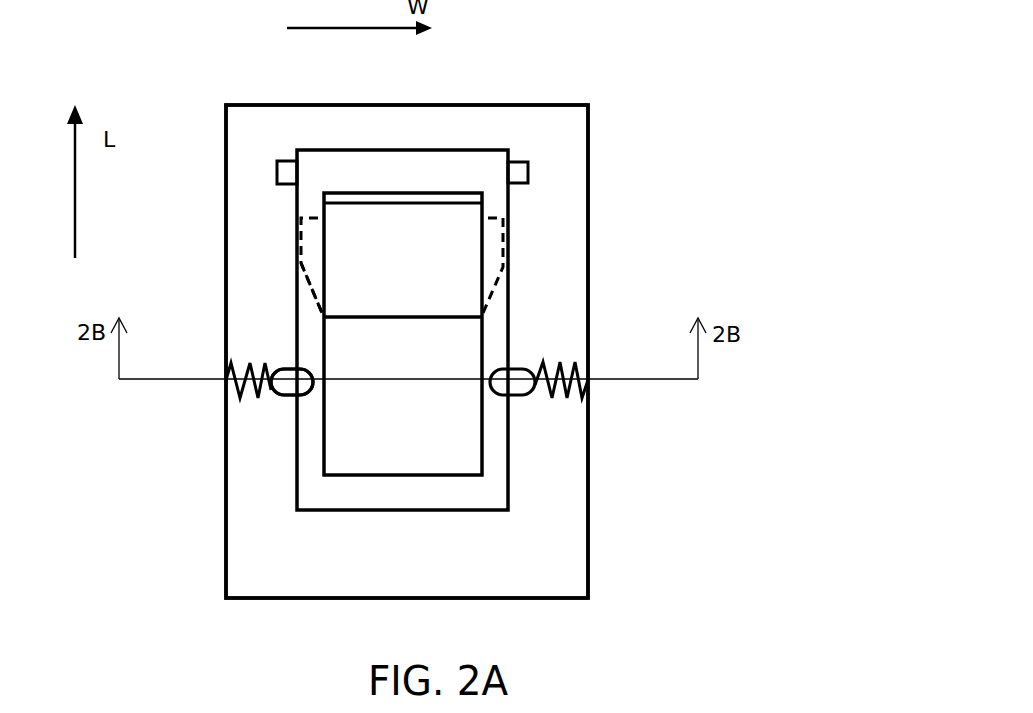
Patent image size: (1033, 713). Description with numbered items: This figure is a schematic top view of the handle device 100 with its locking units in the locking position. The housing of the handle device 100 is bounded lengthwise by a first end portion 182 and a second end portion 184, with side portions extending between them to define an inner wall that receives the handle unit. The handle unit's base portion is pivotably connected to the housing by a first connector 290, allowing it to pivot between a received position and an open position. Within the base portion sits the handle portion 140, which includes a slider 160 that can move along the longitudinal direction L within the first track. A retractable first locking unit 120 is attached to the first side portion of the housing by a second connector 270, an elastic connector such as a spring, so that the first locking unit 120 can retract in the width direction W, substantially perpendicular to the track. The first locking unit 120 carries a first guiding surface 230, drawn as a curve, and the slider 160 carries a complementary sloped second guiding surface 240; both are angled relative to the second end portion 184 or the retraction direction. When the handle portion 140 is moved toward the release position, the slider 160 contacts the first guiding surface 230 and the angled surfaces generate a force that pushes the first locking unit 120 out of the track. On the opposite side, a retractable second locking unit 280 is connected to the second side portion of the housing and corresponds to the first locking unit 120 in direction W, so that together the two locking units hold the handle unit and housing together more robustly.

The handle device 100 is at (643, 117).
The first locking unit 120 is at (288, 388).
The handle portion 140 is at (420, 260).
The slider 160 is at (310, 238).
The first end portion 182 is at (370, 563).
The second end portion 184 is at (365, 170).
The first guiding surface 230 is at (313, 371).
The second guiding surface 240 is at (313, 295).
The second connector 270 is at (253, 398).
The second locking unit 280 is at (550, 395).
The first connector 290 is at (288, 172).